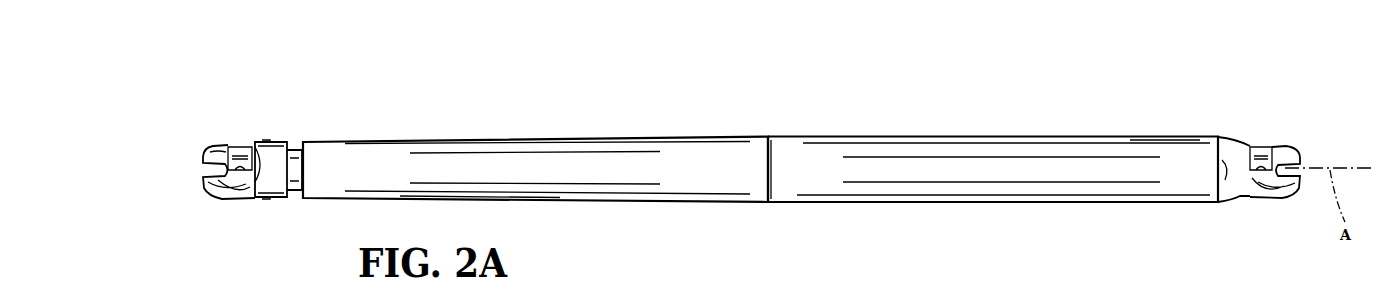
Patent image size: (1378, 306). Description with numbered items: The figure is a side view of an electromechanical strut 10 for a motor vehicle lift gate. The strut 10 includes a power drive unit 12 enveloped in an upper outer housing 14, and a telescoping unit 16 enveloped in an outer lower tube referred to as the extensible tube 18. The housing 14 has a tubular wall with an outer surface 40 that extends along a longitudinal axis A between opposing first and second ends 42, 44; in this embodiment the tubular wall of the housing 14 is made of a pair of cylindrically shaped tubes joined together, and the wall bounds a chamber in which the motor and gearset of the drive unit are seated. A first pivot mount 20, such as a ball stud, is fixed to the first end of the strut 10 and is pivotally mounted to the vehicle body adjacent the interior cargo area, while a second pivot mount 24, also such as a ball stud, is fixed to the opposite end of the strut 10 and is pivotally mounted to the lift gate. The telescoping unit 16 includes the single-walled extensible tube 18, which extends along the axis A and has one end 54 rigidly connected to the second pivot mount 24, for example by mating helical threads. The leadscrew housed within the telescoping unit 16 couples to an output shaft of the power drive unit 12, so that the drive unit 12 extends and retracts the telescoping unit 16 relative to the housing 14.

The electromechanical strut 10 is at (1007, 66).
The power drive unit 12 is at (1190, 133).
The housing 14 is at (1122, 136).
The telescoping unit 16 is at (274, 206).
The extensible tube 18 is at (295, 140).
The first pivot mount 20 is at (1306, 246).
The second pivot mount 24 is at (226, 200).
The outer surface 40 is at (778, 163).
The first end 42 is at (1235, 195).
The second end 44 is at (292, 193).
The first end 54 is at (258, 174).